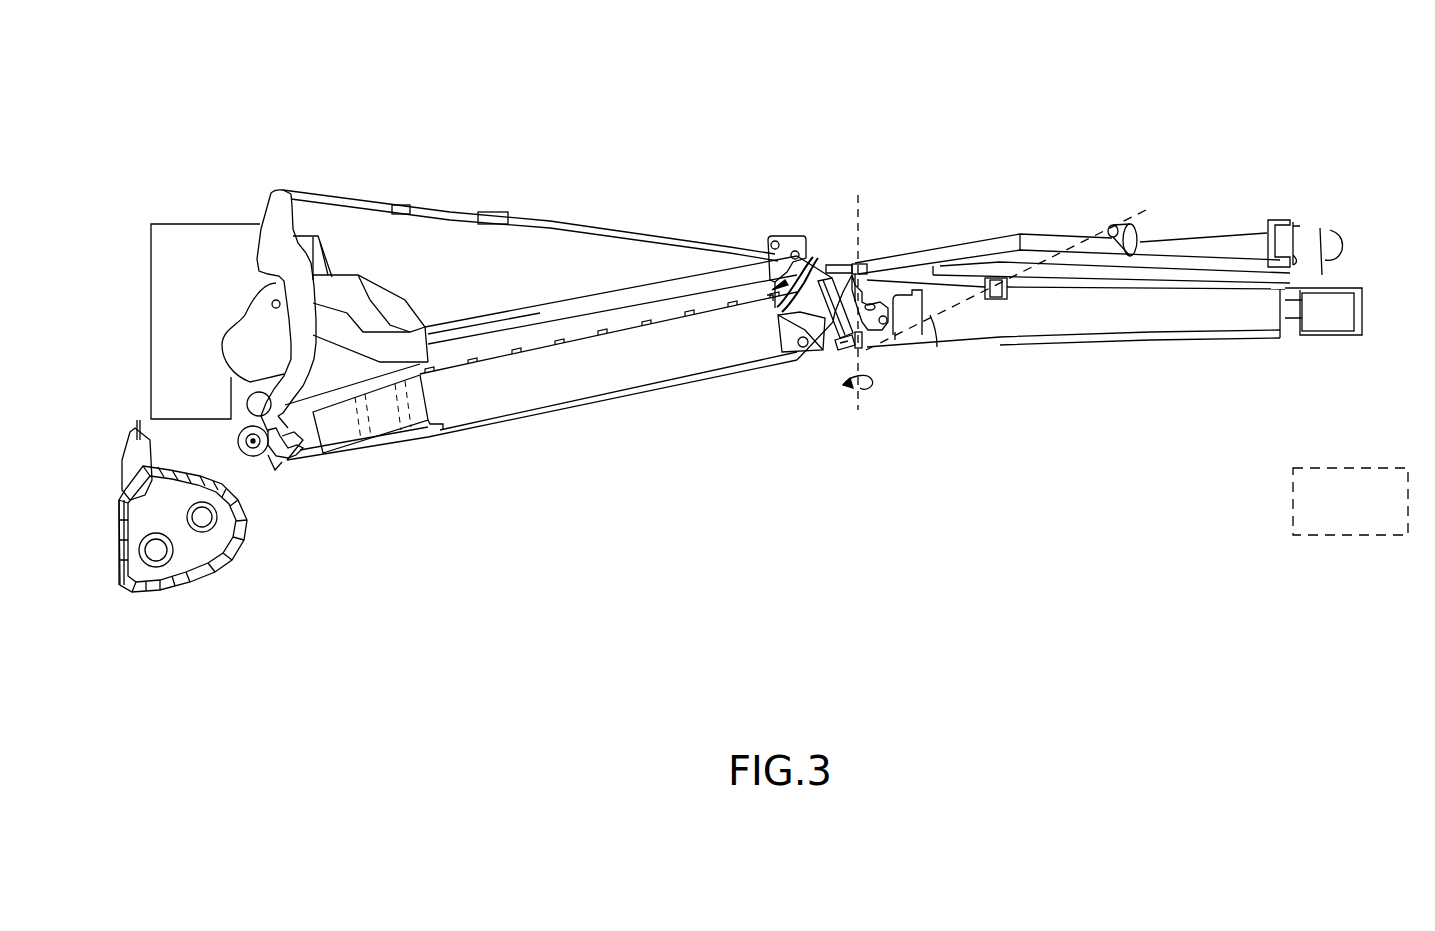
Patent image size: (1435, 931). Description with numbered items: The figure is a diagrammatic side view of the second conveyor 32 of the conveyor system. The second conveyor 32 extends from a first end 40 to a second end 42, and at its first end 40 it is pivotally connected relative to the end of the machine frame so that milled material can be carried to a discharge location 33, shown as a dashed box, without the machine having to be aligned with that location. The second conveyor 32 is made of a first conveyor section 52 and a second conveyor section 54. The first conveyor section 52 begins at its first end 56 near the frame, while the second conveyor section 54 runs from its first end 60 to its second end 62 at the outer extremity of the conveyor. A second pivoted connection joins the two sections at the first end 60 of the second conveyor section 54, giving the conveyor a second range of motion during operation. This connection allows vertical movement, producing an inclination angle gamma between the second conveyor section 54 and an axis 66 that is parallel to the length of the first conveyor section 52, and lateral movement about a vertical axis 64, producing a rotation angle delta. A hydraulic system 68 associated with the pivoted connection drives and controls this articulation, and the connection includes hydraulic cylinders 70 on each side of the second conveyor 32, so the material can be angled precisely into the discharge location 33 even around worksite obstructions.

The second conveyor 32 is at (958, 92).
The discharge location 33 is at (1335, 520).
The first end 40 is at (254, 455).
The second end 42 is at (1352, 290).
The first conveyor section 52 is at (570, 368).
The second conveyor section 54 is at (1068, 312).
The first end 56 is at (270, 453).
The first end 60 is at (905, 312).
The second end 62 is at (1328, 318).
The vertical axis 64 is at (862, 213).
The axis 66 is at (1148, 214).
The hydraulic system 68 is at (773, 262).
The hydraulic cylinders 70 is at (908, 282).